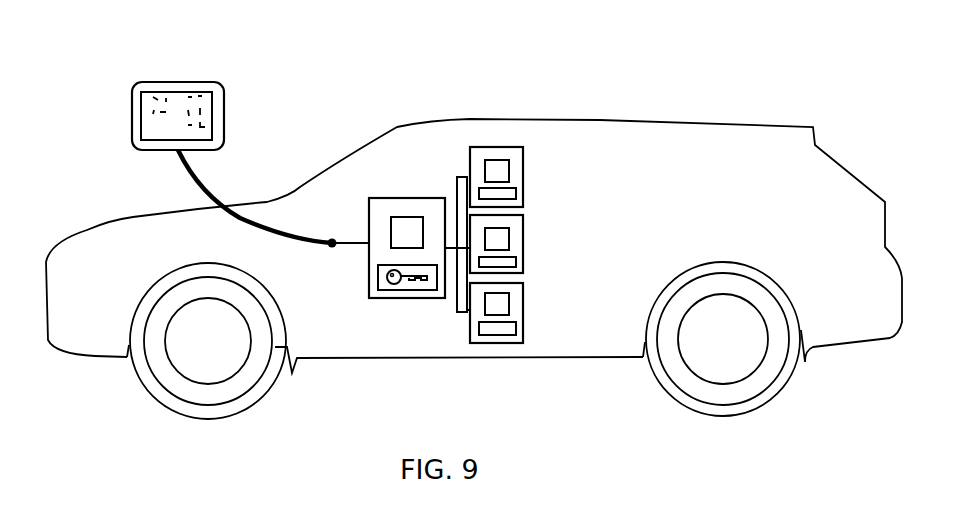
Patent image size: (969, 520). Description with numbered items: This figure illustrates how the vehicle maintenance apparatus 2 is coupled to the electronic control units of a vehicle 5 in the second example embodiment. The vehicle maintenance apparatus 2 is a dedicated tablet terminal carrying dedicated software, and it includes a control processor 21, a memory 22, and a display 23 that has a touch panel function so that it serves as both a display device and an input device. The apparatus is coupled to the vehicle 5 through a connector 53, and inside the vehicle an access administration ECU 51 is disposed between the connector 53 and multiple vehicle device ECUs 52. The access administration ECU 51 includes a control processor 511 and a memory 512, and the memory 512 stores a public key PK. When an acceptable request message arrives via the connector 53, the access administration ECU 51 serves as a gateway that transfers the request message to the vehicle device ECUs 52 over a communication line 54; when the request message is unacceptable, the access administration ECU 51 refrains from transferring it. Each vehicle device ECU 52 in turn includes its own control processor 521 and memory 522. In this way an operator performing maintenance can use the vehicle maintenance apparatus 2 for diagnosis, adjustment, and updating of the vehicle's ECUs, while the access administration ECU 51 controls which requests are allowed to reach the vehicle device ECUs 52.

The vehicle maintenance apparatus 2 is at (232, 80).
The control processor 21 is at (155, 100).
The memory 22 is at (192, 103).
The display 23 is at (173, 132).
The vehicle 5 is at (670, 96).
The access administration ECU 51 is at (432, 207).
The control processor 511 is at (408, 227).
The memory 512 is at (377, 273).
The public key PK is at (397, 285).
The vehicle device ECU 52 is at (510, 175).
The control processor 521 is at (500, 303).
The memory 522 is at (498, 329).
The connector 53 is at (330, 241).
The communication line 54 is at (467, 177).